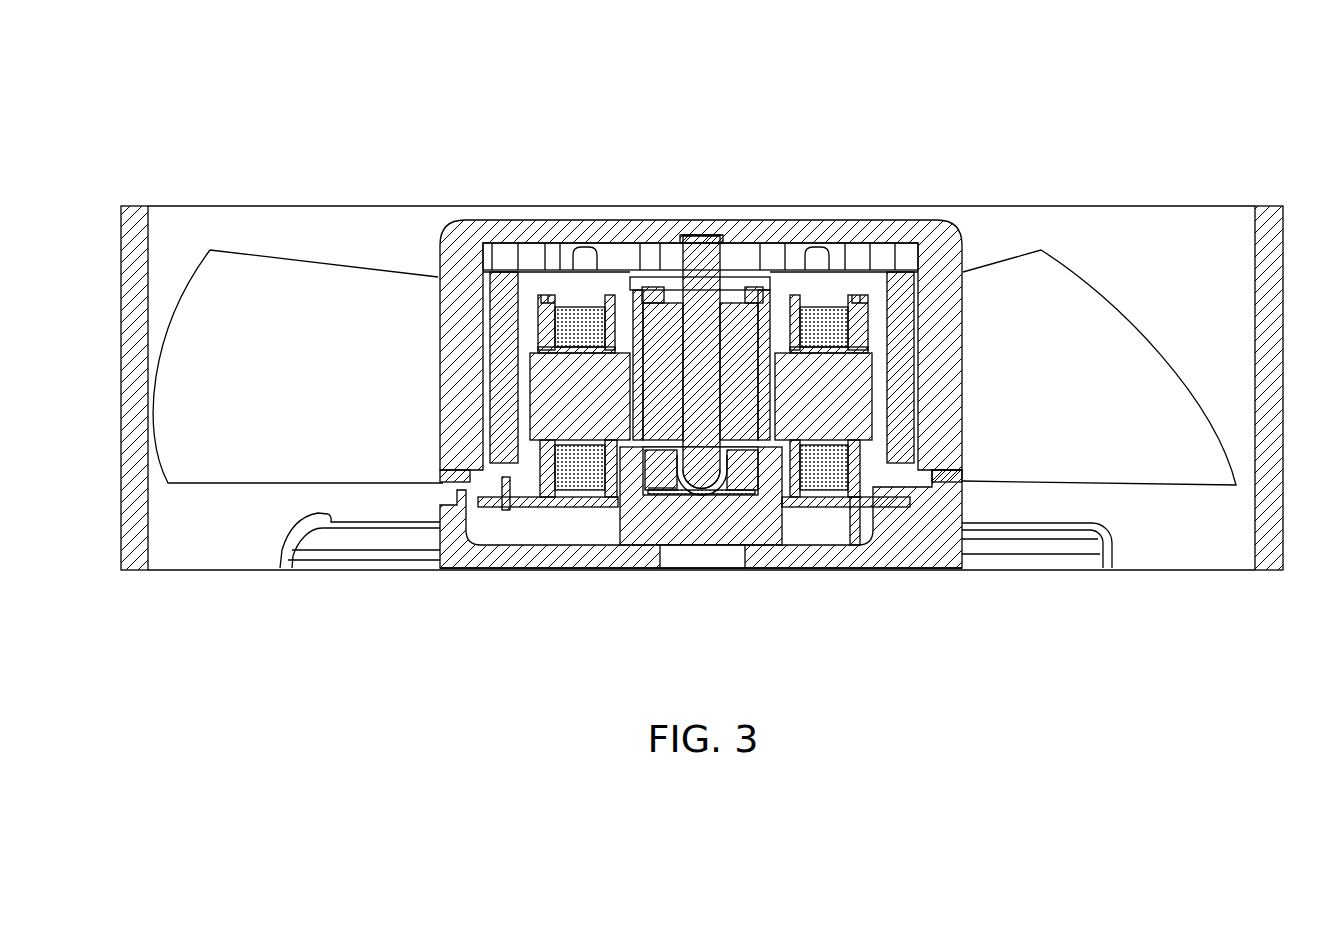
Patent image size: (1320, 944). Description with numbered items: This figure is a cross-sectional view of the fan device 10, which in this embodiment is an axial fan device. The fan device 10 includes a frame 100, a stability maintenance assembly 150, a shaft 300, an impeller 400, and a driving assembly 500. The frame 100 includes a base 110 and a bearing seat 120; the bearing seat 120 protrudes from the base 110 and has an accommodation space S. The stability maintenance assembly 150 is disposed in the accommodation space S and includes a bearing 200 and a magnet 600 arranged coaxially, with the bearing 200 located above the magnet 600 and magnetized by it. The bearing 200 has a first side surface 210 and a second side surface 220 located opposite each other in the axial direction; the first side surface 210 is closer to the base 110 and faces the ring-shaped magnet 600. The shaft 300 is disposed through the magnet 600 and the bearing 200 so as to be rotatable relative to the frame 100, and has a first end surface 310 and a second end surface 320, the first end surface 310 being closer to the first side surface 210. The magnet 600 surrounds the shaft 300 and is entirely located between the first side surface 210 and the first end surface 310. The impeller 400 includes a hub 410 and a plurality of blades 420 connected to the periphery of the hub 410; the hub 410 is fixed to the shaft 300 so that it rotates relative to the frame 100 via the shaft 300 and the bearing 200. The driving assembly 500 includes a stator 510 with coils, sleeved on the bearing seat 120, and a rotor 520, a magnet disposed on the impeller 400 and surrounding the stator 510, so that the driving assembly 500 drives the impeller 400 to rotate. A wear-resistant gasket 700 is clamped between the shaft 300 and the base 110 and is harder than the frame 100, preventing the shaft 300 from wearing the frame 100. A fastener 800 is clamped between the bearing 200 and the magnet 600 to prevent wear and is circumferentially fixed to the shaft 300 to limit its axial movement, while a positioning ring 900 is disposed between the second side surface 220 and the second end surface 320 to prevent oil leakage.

The fan device 10 is at (277, 70).
The frame 100 is at (696, 541).
The base 110 is at (874, 548).
The bearing seat 120 is at (783, 492).
The stability maintenance assembly 150 is at (667, 275).
The bearing 200 is at (640, 328).
The first side surface 210 is at (658, 466).
The second side surface 220 is at (660, 298).
The shaft 300 is at (699, 395).
The first end surface 310 is at (700, 508).
The second end surface 320 is at (690, 232).
The impeller 400 is at (694, 318).
The hub 410 is at (950, 252).
The blades 420 is at (1040, 290).
The driving assembly 500 is at (803, 408).
The stator 510 is at (843, 410).
The rotor 520 is at (897, 370).
The magnet 600 is at (567, 402).
The wear-resistant gasket 700 is at (712, 494).
The fastener 800 is at (770, 325).
The positioning ring 900 is at (745, 443).
The accommodation space S is at (676, 490).